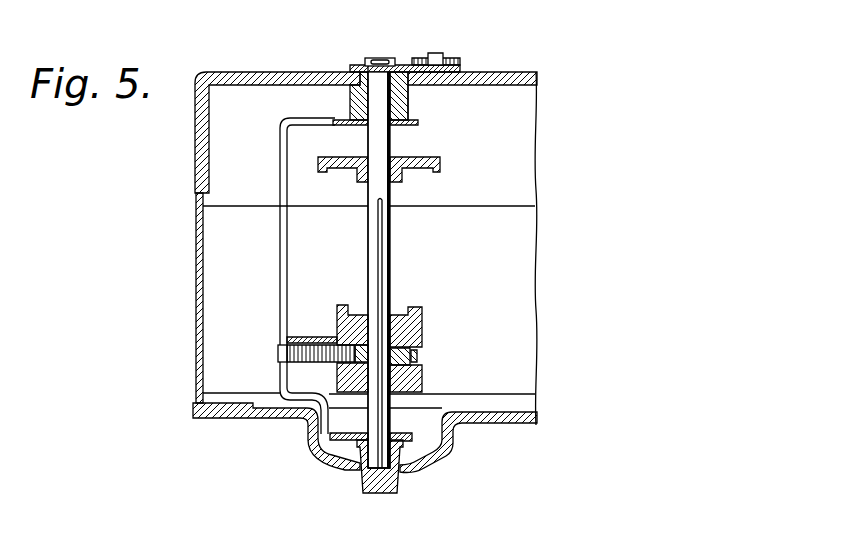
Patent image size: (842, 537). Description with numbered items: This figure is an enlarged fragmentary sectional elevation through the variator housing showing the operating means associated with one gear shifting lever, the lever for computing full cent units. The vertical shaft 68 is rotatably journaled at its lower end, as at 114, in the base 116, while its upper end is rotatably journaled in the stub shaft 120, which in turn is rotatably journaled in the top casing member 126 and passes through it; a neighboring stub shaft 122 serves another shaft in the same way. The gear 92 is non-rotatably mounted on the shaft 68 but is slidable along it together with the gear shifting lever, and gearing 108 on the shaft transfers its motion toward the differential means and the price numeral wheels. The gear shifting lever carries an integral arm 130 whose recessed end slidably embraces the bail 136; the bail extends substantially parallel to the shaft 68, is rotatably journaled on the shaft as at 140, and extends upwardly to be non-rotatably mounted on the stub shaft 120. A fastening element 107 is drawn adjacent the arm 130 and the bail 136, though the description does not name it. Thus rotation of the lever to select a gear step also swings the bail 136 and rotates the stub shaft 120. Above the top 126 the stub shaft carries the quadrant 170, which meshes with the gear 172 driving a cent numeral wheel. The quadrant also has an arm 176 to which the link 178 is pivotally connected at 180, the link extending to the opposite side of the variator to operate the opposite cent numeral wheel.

The shaft 68 is at (380, 258).
The gear 92 is at (415, 353).
The bolt 107 is at (278, 352).
The gearing 108 is at (440, 162).
The journal 114 is at (362, 458).
The base 116 is at (507, 422).
The stub shaft 120 is at (358, 107).
The stub shaft 122 is at (410, 104).
The top casing member 126 is at (514, 84).
The integral arm 130 is at (302, 337).
The bail 136 is at (282, 265).
The journal 140 is at (322, 436).
The quadrant 170 is at (363, 66).
The gear 172 is at (405, 126).
The arm 176 is at (408, 64).
The link 178 is at (455, 60).
The pivot 180 is at (436, 53).